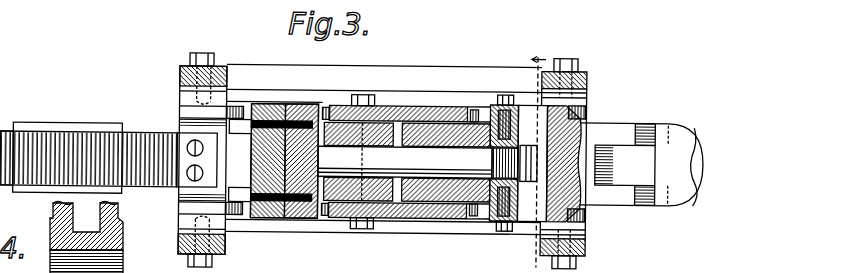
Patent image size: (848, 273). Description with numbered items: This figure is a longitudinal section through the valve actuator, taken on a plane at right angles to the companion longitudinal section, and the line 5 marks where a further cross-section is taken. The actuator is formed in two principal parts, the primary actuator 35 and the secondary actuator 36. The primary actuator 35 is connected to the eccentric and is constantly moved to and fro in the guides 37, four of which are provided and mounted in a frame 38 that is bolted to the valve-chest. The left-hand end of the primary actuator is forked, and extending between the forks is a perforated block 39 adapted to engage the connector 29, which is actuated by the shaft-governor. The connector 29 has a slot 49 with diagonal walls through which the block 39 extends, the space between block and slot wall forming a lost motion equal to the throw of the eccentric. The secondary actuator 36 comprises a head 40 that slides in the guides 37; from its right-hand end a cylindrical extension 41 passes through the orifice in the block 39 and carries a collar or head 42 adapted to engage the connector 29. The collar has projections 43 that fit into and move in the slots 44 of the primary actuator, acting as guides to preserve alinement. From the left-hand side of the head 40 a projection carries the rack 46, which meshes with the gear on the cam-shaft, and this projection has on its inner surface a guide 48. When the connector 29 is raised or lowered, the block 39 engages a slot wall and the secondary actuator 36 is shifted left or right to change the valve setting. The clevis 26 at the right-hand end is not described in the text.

In FIG. 3, the section line 5 5 is at (538, 155).
In FIG. 3, the clevis connector 26 is at (684, 180).
In FIG. 3, the connector 29 is at (437, 125).
In FIG. 4, the connector 29 is at (124, 240).
In FIG. 3, the primary actuator 35 is at (600, 160).
In FIG. 3, the secondary actuator 36 is at (109, 147).
In FIG. 3, the guides 37 is at (258, 88).
In FIG. 3, the frame 38 is at (588, 73).
In FIG. 3, the perforated block 39 is at (380, 215).
In FIG. 3, the head 40 is at (265, 213).
In FIG. 3, the cylindrical extension 41 is at (425, 177).
In FIG. 3, the collar or head 42 is at (477, 129).
In FIG. 3, the projections 43 is at (588, 92).
In FIG. 3, the slots 44 is at (473, 106).
In FIG. 3, the rack 46 is at (18, 133).
In FIG. 3, the guide 48 is at (80, 128).
In FIG. 3, the slot 49 is at (410, 127).